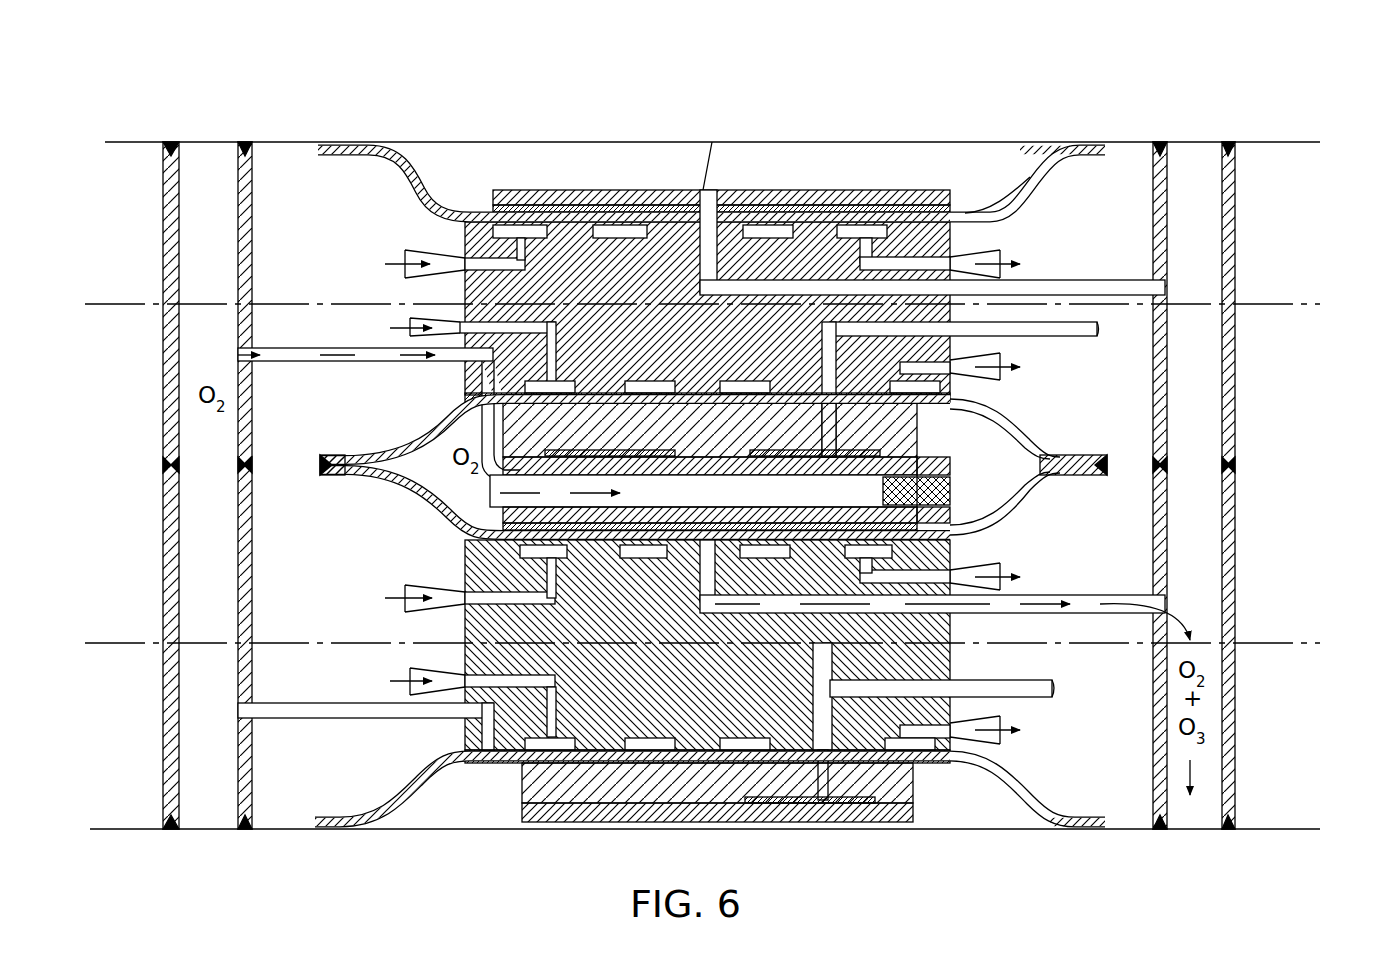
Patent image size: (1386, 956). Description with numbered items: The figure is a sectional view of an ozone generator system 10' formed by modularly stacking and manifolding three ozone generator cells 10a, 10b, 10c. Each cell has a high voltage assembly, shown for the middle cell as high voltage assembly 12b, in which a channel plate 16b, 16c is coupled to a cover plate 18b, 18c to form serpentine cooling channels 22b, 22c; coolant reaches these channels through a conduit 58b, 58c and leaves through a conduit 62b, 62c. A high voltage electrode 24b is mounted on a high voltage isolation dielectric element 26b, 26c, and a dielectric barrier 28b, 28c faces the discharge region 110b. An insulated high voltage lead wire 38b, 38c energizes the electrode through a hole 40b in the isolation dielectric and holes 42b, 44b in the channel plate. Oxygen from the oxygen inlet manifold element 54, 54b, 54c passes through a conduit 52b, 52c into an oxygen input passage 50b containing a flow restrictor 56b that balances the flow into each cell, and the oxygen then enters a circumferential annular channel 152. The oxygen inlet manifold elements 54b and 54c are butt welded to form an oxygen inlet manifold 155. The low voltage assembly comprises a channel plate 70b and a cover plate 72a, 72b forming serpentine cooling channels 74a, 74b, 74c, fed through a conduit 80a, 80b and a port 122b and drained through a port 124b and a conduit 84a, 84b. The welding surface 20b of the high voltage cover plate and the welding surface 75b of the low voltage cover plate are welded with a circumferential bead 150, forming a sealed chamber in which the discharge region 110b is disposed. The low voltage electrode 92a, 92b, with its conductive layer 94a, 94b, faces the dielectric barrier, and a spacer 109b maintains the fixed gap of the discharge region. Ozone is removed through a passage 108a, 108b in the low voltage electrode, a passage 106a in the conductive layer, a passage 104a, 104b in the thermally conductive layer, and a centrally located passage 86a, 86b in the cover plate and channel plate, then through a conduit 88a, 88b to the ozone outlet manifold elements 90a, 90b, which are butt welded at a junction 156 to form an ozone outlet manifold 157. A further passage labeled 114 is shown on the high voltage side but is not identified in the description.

The ozone generator system 10' is at (890, 55).
The ozone generator cell 10a is at (1282, 240).
The ozone generator cell 10b is at (1282, 492).
The ozone generator cell 10c is at (1282, 728).
The high voltage assembly 12b is at (1065, 415).
The channel plate 16b is at (605, 300).
The channel plate 16c is at (707, 696).
The cover plate 18b is at (420, 436).
The cover plate 18c is at (395, 800).
The welding surface 20b is at (322, 458).
The serpentine cooling channels 22b is at (600, 375).
The serpentine cooling channels 22c is at (620, 735).
The high voltage electrode 24b is at (707, 419).
The high voltage isolation dielectric element 26b is at (895, 433).
The high voltage isolation dielectric element 26c is at (913, 785).
The dielectric barrier 28b is at (917, 470).
The dielectric barrier 28c is at (913, 812).
The insulated high voltage lead wire 38b is at (1085, 336).
The insulated high voltage lead wire 38c is at (1050, 680).
The hole in isolation dielectric 40b is at (822, 440).
The hole in channel plate 42b is at (860, 228).
The hole in channel plate 44b is at (937, 290).
The oxygen input passage 50b is at (480, 376).
The conduit 52b is at (365, 372).
The conduit 52c is at (348, 725).
The oxygen inlet manifold element 54 is at (163, 480).
The oxygen inlet manifold element 54b is at (163, 370).
The oxygen inlet manifold element 54c is at (163, 735).
The flow restrictor 56b is at (482, 405).
The conduit 58b is at (420, 338).
The conduit 58c is at (438, 690).
The conduit 62b is at (995, 380).
The conduit 62c is at (998, 740).
The channel plate 70b is at (465, 553).
The cover plate 72a is at (1018, 178).
The cover plate 72b is at (425, 498).
The serpentine cooling channels 74a is at (540, 215).
The serpentine cooling channels 74b is at (830, 555).
The serpentine cooling channels 74c is at (595, 558).
The welding surface 75b is at (330, 475).
The conduit 80a is at (408, 250).
The conduit 80b is at (412, 612).
The conduit 84a is at (985, 258).
The conduit 84b is at (1010, 565).
The centrally located passage 86a is at (830, 228).
The centrally located passage 86b is at (923, 721).
The conduit 88a is at (1112, 280).
The conduit 88b is at (1125, 583).
The ozone outlet manifold element 90a is at (1235, 205).
The ozone outlet manifold element 90b is at (1235, 575).
The low voltage electrode 92a is at (900, 222).
The low voltage electrode 92b is at (503, 515).
The conductive layer 94a is at (490, 212).
The conductive layer 94b is at (985, 505).
The passage 104a is at (700, 240).
The passage 104b is at (700, 600).
The passage 106a is at (710, 142).
The passage 108a is at (708, 225).
The passage 108b is at (703, 494).
The spacer 109b is at (945, 470).
The discharge region 110b is at (855, 504).
The water passage 114 is at (556, 330).
The port 122b is at (540, 580).
The port 124b is at (950, 553).
The circumferential bead 150 is at (320, 468).
The circumferential channel 152 is at (425, 467).
The oxygen inlet manifold 155 is at (215, 135).
The junction 156 is at (1236, 466).
The ozone outlet manifold 157 is at (1197, 158).